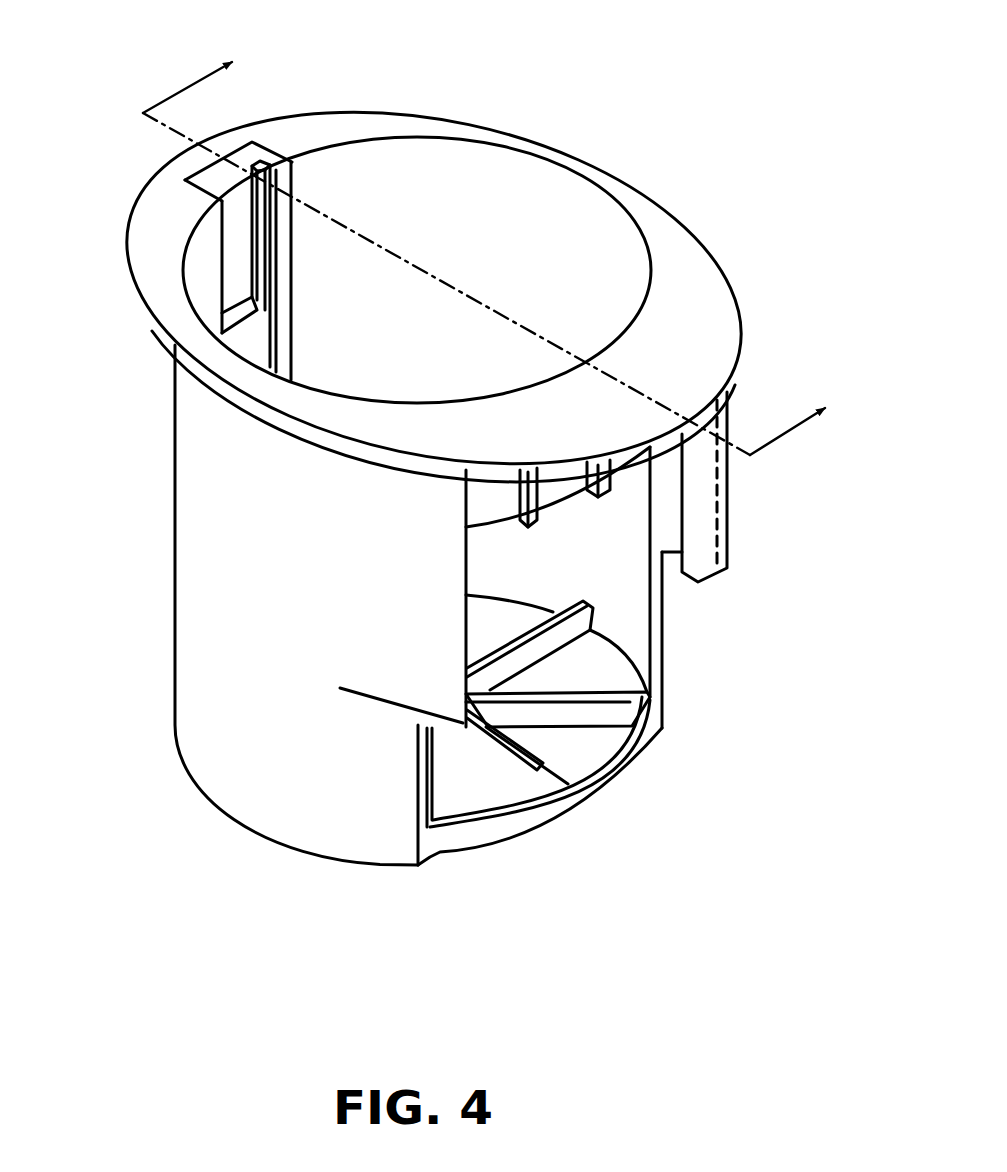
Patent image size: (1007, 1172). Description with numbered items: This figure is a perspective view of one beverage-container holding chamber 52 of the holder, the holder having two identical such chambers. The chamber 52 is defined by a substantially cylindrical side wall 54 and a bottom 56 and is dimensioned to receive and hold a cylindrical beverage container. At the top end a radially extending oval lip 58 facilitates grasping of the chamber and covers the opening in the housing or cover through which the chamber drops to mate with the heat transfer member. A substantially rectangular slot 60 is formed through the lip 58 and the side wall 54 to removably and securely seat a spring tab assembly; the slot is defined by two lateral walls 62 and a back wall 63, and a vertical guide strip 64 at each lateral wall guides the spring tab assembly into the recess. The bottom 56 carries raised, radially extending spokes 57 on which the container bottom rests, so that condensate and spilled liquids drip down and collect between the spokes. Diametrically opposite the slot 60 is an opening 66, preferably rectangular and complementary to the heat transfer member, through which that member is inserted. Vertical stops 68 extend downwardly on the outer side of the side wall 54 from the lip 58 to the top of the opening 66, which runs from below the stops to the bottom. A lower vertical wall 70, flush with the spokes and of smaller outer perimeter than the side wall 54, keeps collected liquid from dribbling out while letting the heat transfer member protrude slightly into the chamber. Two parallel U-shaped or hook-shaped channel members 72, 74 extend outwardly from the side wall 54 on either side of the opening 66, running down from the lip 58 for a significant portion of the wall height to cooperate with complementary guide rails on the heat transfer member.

The chamber 52 is at (669, 163).
The side wall 54 is at (316, 613).
The bottom 56 is at (599, 689).
The spokes 57 is at (545, 763).
The lip 58 is at (707, 290).
The slot 60 is at (240, 251).
The lateral walls 62 is at (277, 332).
The back wall 63 is at (230, 186).
The vertical guide strip 64 is at (293, 187).
The opening 66 is at (691, 637).
The vertical stops 68 is at (583, 497).
The lower vertical wall 70 is at (548, 815).
The channel member 72 is at (440, 668).
The channel member 74 is at (700, 562).